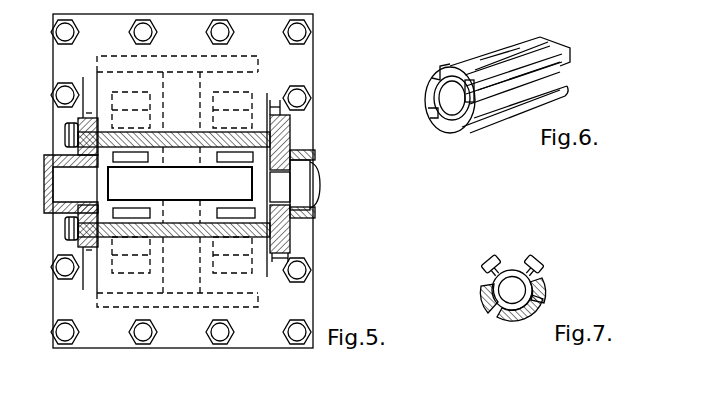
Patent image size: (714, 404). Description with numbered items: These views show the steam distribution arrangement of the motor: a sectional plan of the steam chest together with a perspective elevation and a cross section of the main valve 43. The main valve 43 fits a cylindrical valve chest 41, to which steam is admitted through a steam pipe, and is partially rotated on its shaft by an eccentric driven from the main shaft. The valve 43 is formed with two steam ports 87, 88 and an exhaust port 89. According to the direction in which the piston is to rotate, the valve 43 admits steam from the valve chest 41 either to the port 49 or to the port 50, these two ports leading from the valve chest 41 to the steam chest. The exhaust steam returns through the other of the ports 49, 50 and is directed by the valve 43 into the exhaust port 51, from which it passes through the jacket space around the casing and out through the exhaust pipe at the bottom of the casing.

In FIG. 5, the valve chest 41 is at (187, 133).
In FIG. 5, the port 49 is at (140, 162).
In FIG. 5, the port 50 is at (240, 162).
In FIG. 5, the exhaust port 51 is at (180, 183).
In FIG. 6, the main valve 43 is at (497, 85).
In FIG. 7, the main valve 43 is at (499, 285).
In FIG. 7, the steam port 87 is at (494, 289).
In FIG. 6, the steam port 88 is at (548, 79).
In FIG. 7, the steam port 88 is at (527, 287).
In FIG. 7, the exhaust port 89 is at (505, 320).